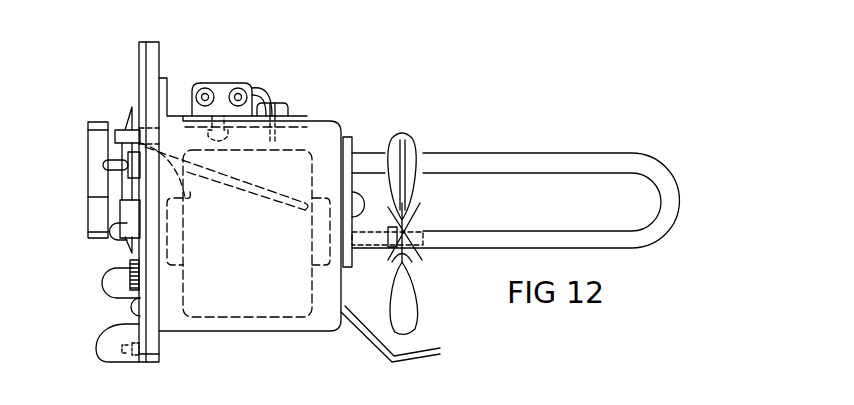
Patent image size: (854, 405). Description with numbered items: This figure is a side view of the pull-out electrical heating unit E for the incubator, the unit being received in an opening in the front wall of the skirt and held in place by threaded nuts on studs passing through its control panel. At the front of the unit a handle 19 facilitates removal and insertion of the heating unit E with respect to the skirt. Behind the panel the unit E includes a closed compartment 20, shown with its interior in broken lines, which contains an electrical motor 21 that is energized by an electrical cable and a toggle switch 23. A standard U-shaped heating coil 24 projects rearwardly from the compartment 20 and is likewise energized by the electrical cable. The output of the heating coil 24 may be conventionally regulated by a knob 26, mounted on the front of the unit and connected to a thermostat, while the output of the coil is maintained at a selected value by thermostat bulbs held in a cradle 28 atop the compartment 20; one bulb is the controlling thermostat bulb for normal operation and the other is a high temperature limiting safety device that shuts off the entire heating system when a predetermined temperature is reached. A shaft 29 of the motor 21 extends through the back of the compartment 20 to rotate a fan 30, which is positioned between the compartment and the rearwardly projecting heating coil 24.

The heating unit E is at (150, 43).
The handle 19 is at (100, 356).
The closed compartment 20 is at (210, 331).
The electrical motor 21 is at (282, 318).
The toggle switch 23 is at (103, 165).
The U-shaped heating coil 24 is at (550, 163).
The knob 26 is at (88, 188).
The cradle 28 is at (225, 85).
The shaft 29 is at (385, 228).
The fan 30 is at (410, 316).